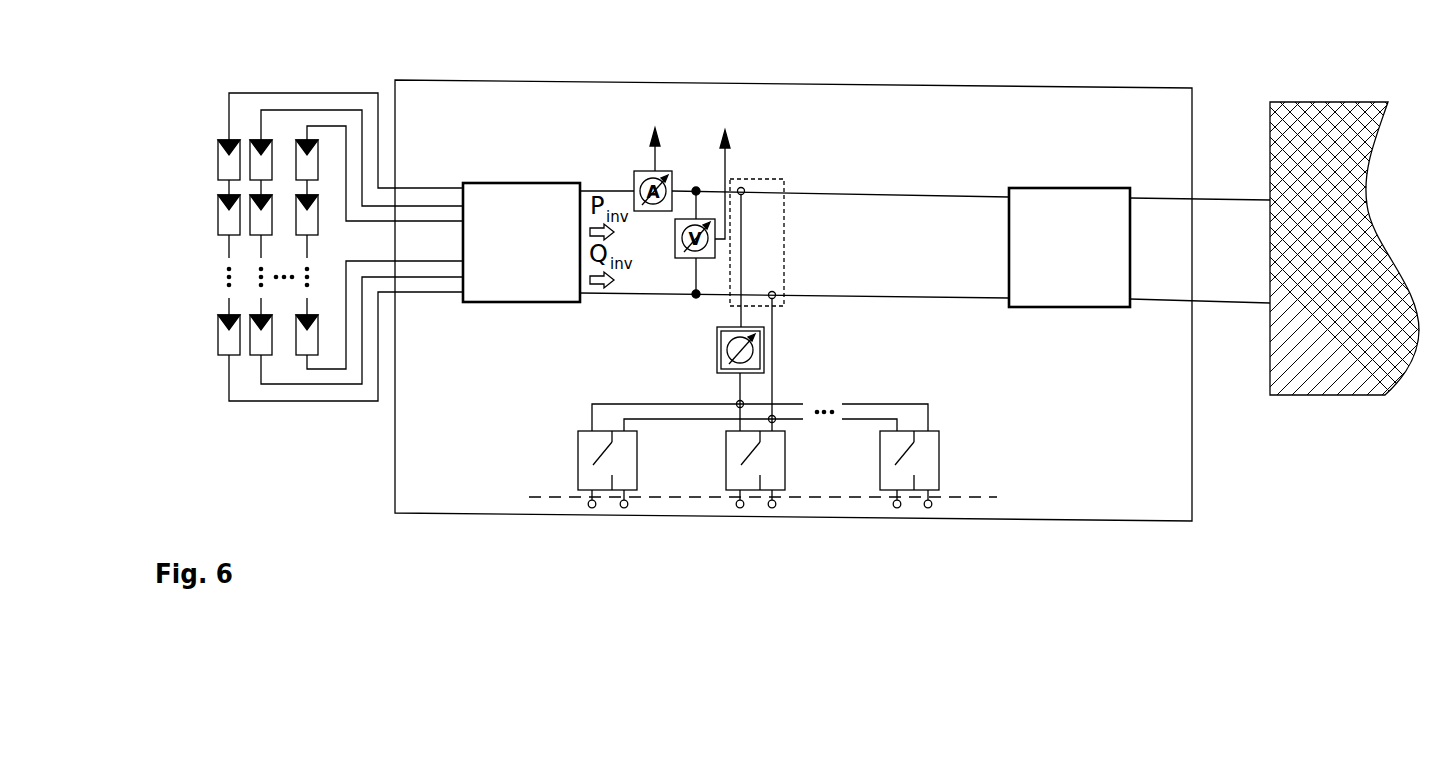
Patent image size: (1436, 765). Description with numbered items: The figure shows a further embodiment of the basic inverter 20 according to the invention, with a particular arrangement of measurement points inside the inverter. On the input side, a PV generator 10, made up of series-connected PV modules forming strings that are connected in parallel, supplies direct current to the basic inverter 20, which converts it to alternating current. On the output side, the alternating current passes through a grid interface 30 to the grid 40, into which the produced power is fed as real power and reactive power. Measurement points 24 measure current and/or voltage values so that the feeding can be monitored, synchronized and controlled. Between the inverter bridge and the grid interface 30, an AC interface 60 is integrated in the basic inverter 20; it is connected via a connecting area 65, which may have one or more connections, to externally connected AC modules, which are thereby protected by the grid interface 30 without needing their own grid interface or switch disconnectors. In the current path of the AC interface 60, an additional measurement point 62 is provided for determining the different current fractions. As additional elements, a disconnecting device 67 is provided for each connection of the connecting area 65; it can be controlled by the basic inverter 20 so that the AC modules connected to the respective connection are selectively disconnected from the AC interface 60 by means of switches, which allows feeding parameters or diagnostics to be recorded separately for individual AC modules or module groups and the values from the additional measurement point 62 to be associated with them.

The PV generator 10 is at (208, 207).
The basic inverter 20 is at (446, 80).
The measurement points 24 is at (690, 165).
The grid interface 30 is at (1050, 188).
The grid 40 is at (1314, 102).
The AC interface 60 is at (787, 242).
The additional measurement point 62 is at (715, 342).
The connecting area 65 is at (958, 498).
The disconnecting device 67 is at (938, 432).